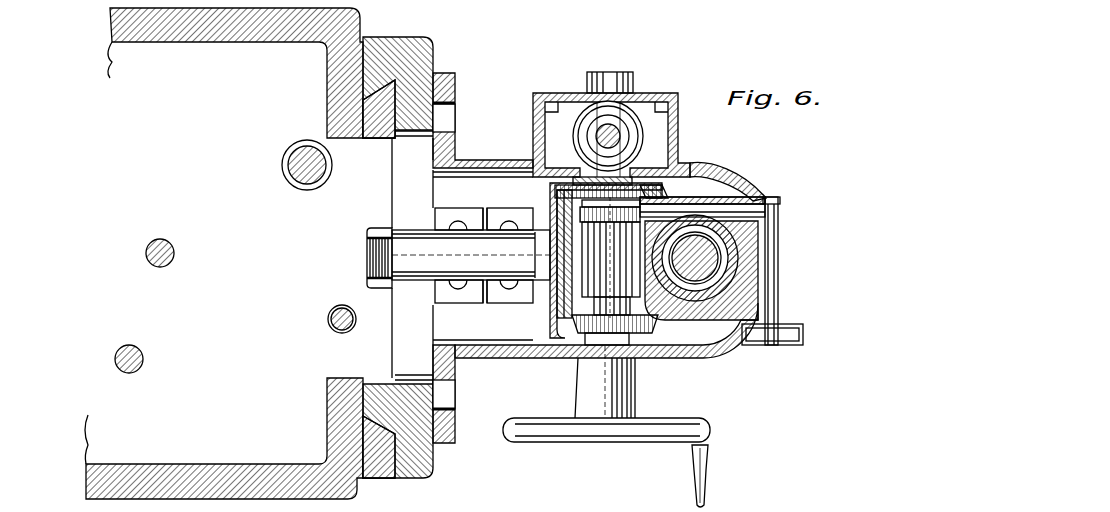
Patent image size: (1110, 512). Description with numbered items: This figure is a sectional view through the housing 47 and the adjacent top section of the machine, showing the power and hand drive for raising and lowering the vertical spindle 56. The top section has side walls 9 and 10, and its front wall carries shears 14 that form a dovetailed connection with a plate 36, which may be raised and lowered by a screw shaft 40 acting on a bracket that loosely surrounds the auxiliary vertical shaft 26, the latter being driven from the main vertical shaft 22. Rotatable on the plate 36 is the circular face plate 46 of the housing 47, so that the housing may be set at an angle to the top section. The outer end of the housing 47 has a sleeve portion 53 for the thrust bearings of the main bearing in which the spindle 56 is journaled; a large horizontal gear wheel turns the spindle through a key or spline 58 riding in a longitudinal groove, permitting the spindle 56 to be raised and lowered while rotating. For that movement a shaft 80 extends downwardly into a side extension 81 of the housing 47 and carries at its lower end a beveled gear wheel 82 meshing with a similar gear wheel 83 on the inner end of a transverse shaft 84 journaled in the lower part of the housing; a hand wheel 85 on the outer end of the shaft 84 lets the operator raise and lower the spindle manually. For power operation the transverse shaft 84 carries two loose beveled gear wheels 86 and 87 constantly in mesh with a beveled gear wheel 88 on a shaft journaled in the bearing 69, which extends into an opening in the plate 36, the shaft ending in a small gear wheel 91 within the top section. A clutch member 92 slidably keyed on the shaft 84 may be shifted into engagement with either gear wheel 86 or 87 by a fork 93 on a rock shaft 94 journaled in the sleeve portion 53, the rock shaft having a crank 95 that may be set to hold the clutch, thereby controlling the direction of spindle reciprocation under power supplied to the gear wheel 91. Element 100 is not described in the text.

The side wall 9 is at (190, 470).
The side wall 10 is at (190, 35).
The shears 14 is at (382, 100).
The main vertical shaft 22 is at (145, 353).
The auxiliary vertical shaft 26 is at (160, 268).
The plate 36 is at (430, 56).
The screw shaft 40 is at (337, 328).
The circular face plate 46 is at (455, 142).
The housing 47 is at (662, 360).
The sleeve portion 53 is at (725, 307).
The vertical spindle 56 is at (712, 256).
The key or spline 58 is at (722, 280).
The bearing 69 is at (468, 211).
The shaft 80 is at (605, 128).
The side extension 81 is at (680, 107).
The beveled gear wheel 82 is at (628, 112).
The beveled gear wheel 83 is at (640, 176).
The transverse shaft 84 is at (596, 348).
The hand wheel 85 is at (634, 442).
The loose beveled gear wheel 86 is at (662, 184).
The loose beveled gear wheel 87 is at (652, 327).
The beveled gear wheel 88 is at (553, 305).
The small gear wheel 91 is at (373, 229).
The clutch member 92 is at (608, 273).
The fork 93 is at (580, 222).
The rock shaft 94 is at (720, 198).
The crank 95 is at (777, 278).
The tube 100 is at (295, 175).